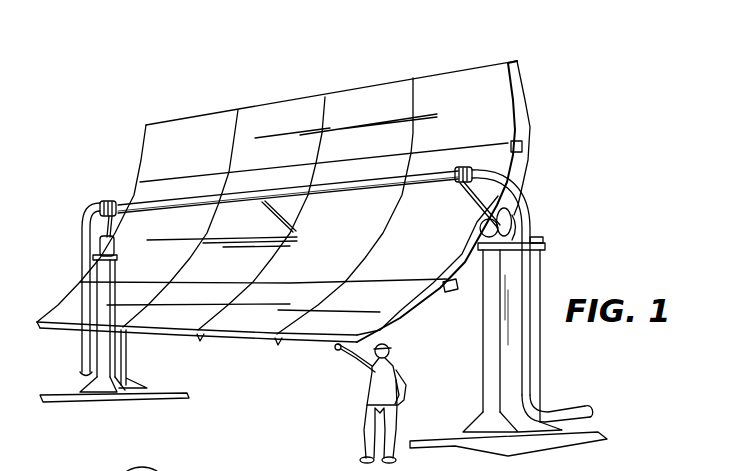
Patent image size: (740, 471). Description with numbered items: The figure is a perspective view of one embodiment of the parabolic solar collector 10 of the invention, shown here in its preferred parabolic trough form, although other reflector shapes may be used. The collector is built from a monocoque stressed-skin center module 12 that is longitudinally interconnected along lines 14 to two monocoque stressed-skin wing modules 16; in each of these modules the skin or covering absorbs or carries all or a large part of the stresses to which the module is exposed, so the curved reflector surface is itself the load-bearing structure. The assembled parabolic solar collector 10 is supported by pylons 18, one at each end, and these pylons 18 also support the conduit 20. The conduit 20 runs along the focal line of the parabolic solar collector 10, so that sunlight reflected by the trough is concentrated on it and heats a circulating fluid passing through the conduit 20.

The parabolic solar collector 10 is at (341, 71).
The monocoque stressed-skin center module 12 is at (133, 257).
The lines 14 is at (152, 182).
The monocoque stressed-skin wing modules 16 is at (188, 132).
The pylons 18 is at (100, 383).
The conduit 20 is at (82, 215).